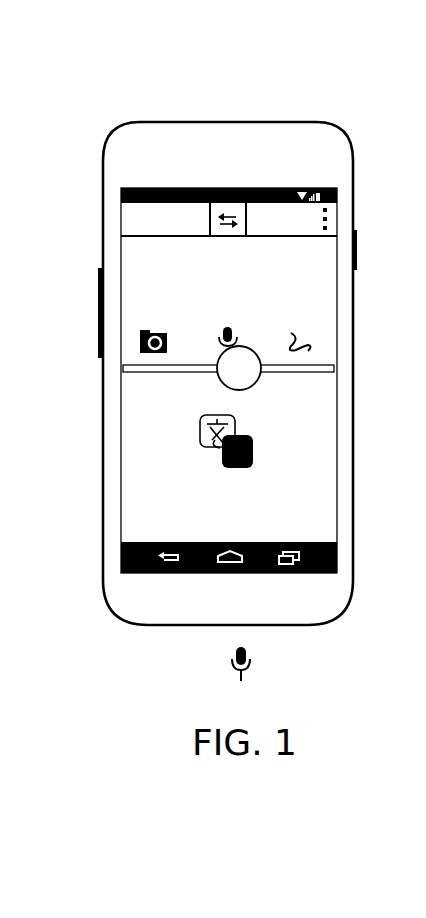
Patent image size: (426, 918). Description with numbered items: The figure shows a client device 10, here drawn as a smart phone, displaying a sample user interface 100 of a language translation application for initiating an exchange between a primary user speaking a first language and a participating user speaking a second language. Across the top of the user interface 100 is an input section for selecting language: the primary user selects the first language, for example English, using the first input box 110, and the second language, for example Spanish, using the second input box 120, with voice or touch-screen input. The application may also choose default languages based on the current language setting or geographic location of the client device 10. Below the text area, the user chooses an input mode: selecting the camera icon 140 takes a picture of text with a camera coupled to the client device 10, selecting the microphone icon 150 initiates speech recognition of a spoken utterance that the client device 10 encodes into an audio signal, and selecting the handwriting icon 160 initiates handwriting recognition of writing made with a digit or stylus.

The client device 10 is at (221, 108).
The user interface 100 is at (371, 203).
The first input box 110 is at (128, 222).
The second input box 120 is at (330, 212).
The camera icon 140 is at (140, 343).
The microphone icon 150 is at (233, 328).
The handwriting icon 160 is at (298, 331).